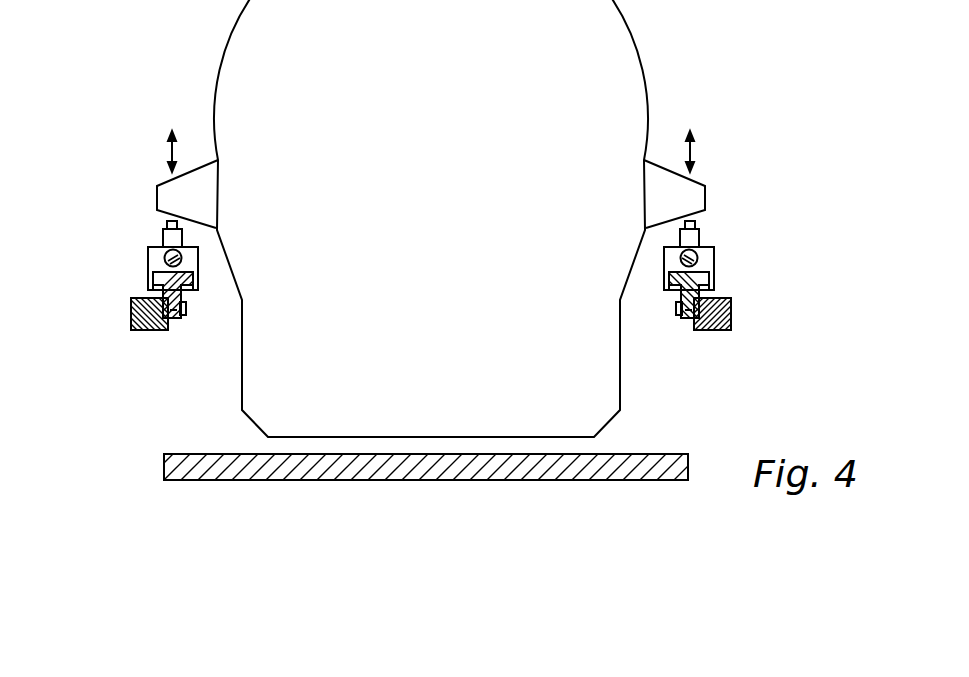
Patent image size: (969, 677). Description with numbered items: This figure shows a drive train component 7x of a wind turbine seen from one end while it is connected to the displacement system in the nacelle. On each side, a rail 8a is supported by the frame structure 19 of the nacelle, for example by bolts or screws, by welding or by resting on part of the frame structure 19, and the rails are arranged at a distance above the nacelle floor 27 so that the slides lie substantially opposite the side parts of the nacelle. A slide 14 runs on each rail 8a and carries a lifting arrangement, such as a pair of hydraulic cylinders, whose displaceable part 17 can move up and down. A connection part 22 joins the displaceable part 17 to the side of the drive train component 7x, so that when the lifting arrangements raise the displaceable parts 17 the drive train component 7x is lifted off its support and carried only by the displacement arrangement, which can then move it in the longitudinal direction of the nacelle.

The drive train component 7x is at (538, 63).
The nacelle floor 27 is at (660, 453).
The connection part 22 is at (205, 180).
The displaceable part 17 is at (160, 220).
The slide 14 is at (148, 247).
The rail 8a is at (158, 282).
The frame structure 19 is at (153, 330).